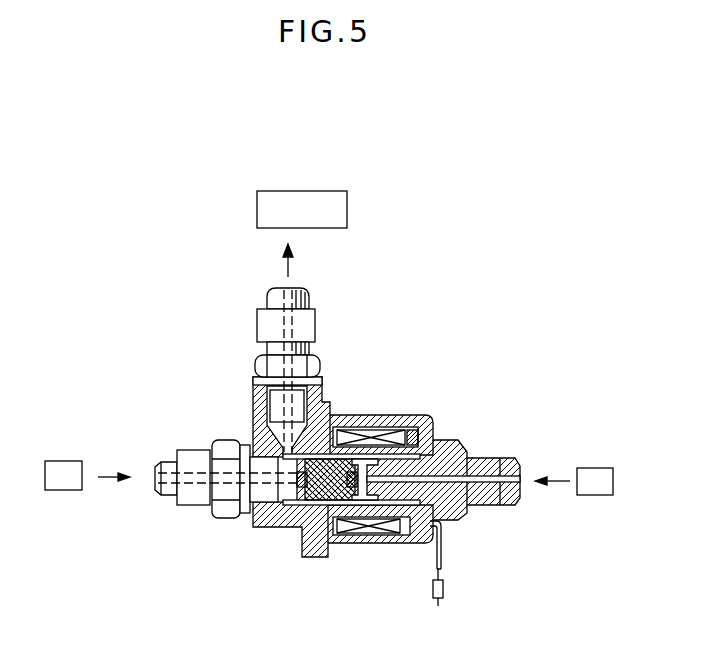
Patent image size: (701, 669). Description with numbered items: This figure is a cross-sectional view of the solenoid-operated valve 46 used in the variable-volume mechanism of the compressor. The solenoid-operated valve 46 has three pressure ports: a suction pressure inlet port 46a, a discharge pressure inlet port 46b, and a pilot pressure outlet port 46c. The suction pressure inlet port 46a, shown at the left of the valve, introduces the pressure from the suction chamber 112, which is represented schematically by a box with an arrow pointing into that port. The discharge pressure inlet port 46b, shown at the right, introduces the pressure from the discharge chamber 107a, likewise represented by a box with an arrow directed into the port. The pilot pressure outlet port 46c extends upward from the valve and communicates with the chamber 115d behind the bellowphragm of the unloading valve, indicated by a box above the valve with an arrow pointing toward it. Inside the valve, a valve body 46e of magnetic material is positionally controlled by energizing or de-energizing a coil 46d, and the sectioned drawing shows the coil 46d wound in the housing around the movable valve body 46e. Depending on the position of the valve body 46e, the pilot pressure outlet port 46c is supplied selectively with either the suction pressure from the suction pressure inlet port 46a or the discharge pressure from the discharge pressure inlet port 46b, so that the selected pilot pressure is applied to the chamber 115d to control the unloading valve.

The solenoid-operated valve 46 is at (278, 527).
The suction pressure inlet port 46a is at (190, 492).
The discharge pressure inlet port 46b is at (508, 480).
The pilot pressure outlet port 46c is at (305, 296).
The coil 46d is at (375, 435).
The valve body 46e is at (343, 530).
The suction chamber 112 is at (67, 466).
The discharge chamber 107a is at (598, 470).
The chamber 115d is at (330, 198).